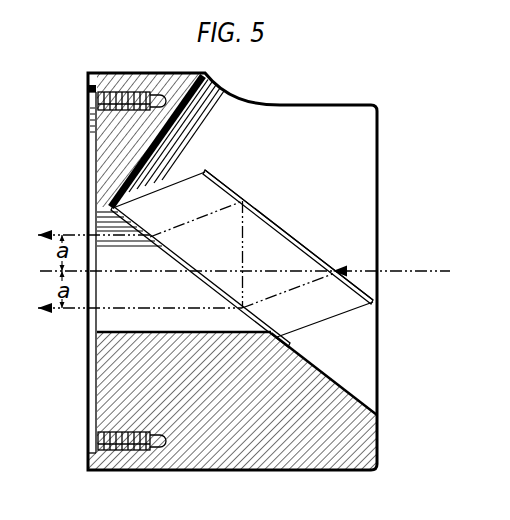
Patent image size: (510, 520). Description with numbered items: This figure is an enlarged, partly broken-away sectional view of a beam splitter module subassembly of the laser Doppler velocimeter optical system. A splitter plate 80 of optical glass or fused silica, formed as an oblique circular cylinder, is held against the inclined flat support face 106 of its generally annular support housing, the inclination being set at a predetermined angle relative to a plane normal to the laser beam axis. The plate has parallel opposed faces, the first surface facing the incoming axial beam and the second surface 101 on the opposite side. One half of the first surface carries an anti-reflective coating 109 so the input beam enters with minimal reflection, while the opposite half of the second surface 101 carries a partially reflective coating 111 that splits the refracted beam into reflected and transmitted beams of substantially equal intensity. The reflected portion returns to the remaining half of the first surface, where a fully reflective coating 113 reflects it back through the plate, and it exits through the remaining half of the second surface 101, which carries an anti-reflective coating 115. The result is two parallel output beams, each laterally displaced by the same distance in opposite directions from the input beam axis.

The splitter plate 80 is at (196, 182).
The second surface of splitter plate 101 is at (172, 266).
The inclined flat support face 106 is at (292, 226).
The anti-reflective coating 109 is at (318, 259).
The partially reflective coating 111 is at (220, 291).
The fully reflective coating 113 is at (263, 213).
The anti-reflective coating 115 is at (176, 254).